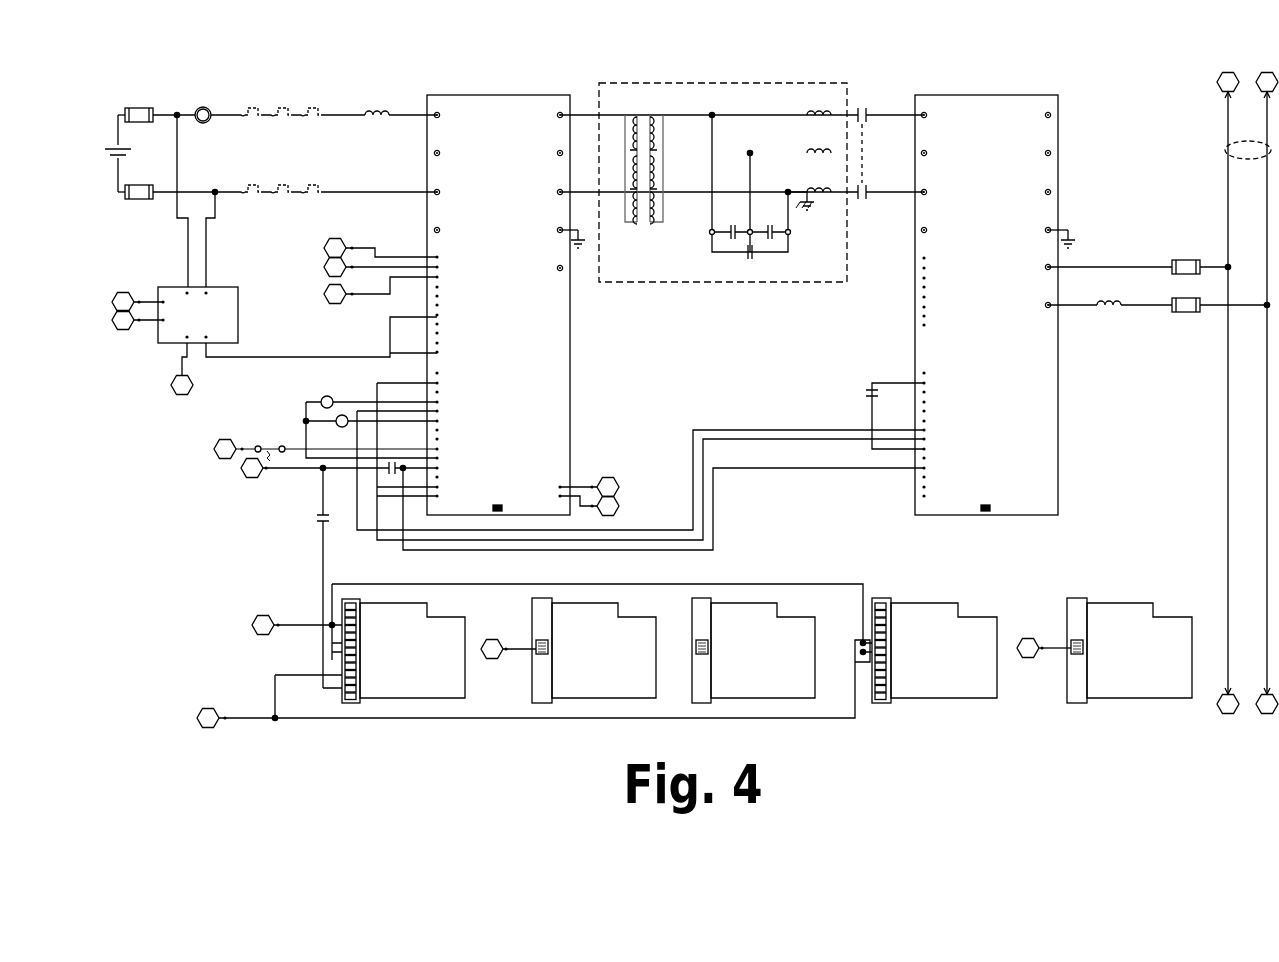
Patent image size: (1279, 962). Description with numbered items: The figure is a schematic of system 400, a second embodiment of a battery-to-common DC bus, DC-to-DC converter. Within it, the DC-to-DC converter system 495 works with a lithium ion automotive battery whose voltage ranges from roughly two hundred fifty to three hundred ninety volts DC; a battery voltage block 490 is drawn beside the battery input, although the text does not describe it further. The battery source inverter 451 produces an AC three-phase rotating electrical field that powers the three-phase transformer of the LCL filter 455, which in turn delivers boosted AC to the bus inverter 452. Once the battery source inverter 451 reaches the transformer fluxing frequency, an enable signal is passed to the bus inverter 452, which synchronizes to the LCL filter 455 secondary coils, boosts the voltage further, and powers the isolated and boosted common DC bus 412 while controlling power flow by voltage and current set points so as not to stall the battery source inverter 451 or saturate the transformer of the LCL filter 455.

The DC-to-DC converter system 495 is at (378, 58).
The battery voltage sensor 490 is at (221, 287).
The battery source inverter 451 is at (506, 305).
The LCL filter 455 is at (632, 83).
The bus inverter 452 is at (970, 305).
The common DC bus 412 is at (1225, 150).
The system 400 is at (205, 655).